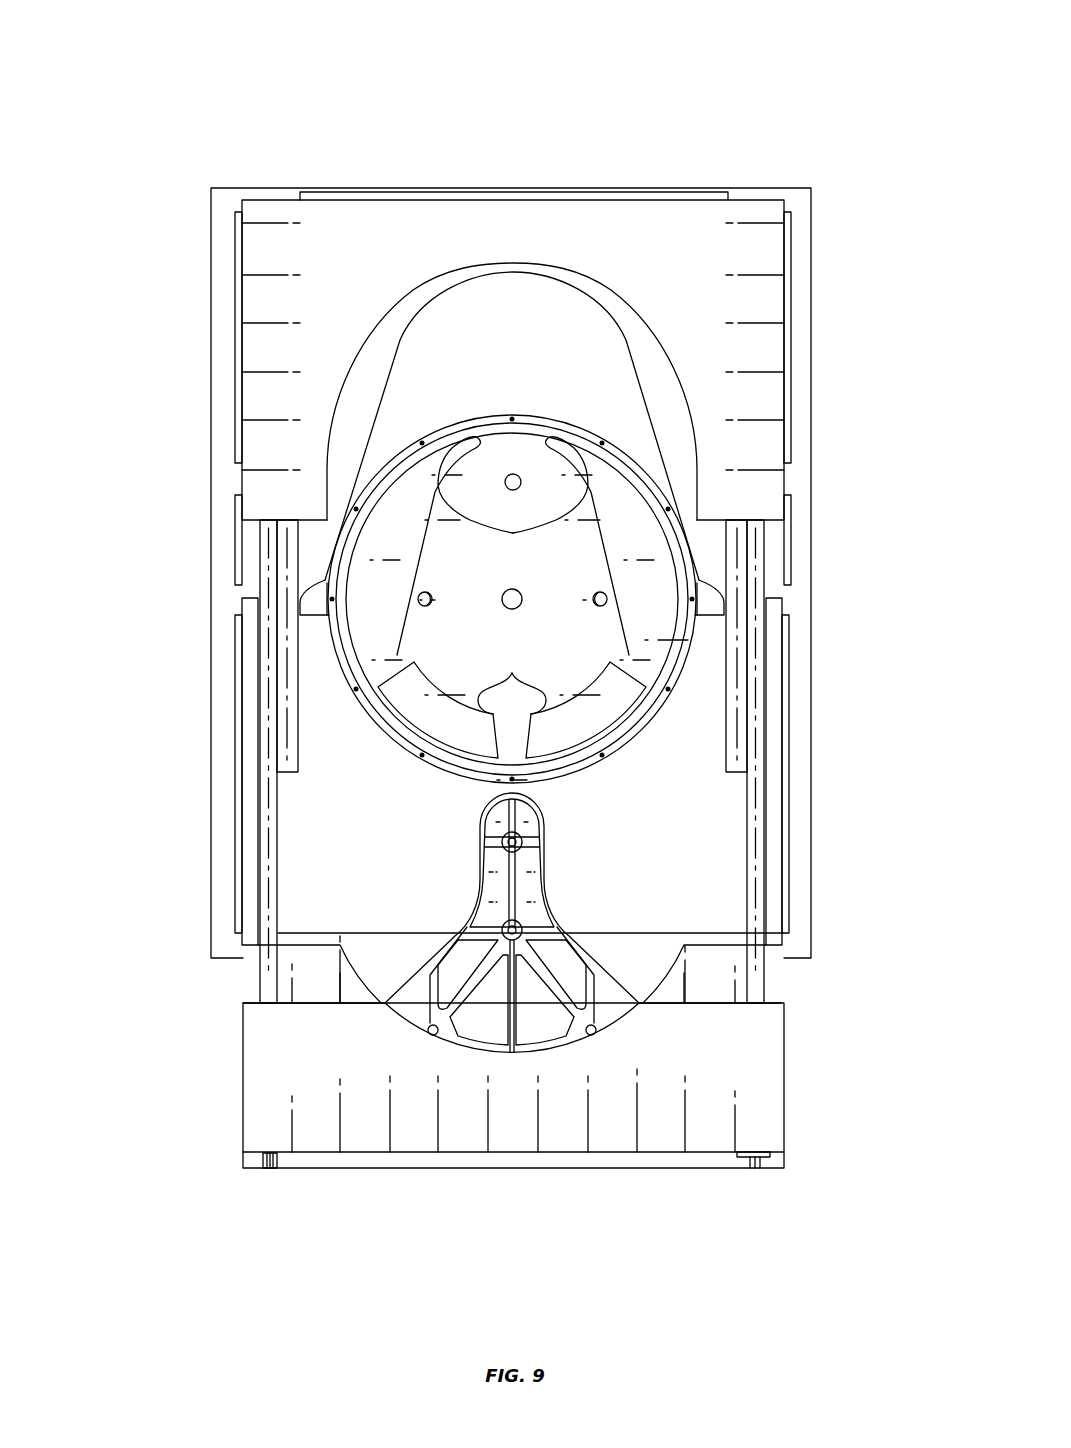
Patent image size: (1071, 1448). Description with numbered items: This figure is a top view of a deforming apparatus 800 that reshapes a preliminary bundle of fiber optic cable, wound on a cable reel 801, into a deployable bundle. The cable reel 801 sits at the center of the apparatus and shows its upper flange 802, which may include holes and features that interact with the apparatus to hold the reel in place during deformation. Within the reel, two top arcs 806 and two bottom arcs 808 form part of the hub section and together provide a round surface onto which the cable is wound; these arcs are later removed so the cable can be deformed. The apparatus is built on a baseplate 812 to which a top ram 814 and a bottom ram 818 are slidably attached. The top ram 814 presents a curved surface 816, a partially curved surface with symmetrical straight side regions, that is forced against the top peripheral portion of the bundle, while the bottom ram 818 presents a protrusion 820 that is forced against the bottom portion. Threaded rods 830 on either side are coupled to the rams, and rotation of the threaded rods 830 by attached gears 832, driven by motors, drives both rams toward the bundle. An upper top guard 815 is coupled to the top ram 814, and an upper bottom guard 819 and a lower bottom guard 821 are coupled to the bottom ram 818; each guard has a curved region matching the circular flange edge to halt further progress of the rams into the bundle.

The deforming apparatus 800 is at (108, 150).
The cable reel 801 is at (457, 775).
The upper flange 802 is at (618, 740).
The top arc 806 is at (513, 533).
The bottom arc 808 is at (512, 673).
The baseplate 812 is at (811, 318).
The top ram 814 is at (380, 400).
The upper top guard 815 is at (337, 258).
The curved surface 816 is at (517, 273).
The bottom ram 818 is at (457, 928).
The upper bottom guard 819 is at (372, 1105).
The protrusion 820 is at (548, 876).
The lower bottom guard 821 is at (243, 985).
The threaded rod 830 is at (853, 836).
The gear 832 is at (770, 1155).